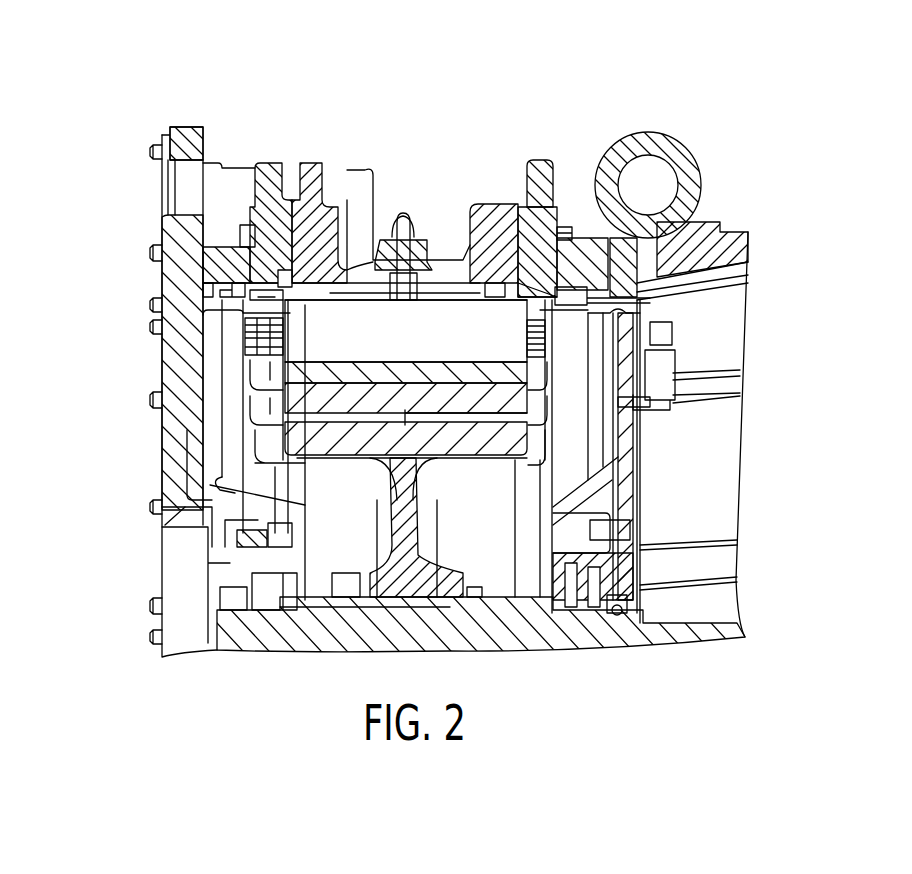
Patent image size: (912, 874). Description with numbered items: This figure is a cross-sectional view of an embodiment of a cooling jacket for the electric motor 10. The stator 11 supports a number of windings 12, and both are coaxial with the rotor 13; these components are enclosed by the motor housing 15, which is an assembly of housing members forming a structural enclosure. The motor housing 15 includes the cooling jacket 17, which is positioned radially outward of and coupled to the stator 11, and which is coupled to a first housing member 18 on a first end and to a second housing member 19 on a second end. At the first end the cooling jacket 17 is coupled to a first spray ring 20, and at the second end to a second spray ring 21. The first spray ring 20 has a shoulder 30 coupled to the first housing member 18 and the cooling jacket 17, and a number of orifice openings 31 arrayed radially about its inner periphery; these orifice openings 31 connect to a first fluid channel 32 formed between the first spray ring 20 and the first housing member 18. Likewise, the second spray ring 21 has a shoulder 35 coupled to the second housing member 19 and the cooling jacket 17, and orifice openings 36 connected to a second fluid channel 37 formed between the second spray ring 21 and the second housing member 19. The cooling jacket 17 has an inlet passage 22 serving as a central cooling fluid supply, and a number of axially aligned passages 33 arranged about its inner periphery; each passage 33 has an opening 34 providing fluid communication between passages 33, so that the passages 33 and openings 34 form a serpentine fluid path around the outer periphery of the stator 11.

The electric motor 10 is at (92, 80).
The stator 11 is at (303, 332).
The windings 12 is at (245, 420).
The rotor 13 is at (400, 528).
The motor housing 15 is at (185, 227).
The cooling jacket 17 is at (313, 160).
The first housing member 18 is at (272, 160).
The second housing member 19 is at (540, 160).
The first spray ring 20 is at (262, 292).
The second spray ring 21 is at (542, 250).
The inlet passage 22 is at (412, 237).
The shoulder 30 is at (350, 272).
The orifice openings 31 is at (230, 297).
The first fluid channel 32 is at (257, 297).
The passages 33 is at (353, 283).
The opening 34 is at (498, 283).
The shoulder 35 is at (525, 290).
The orifice openings 36 is at (640, 293).
The second fluid channel 37 is at (575, 285).